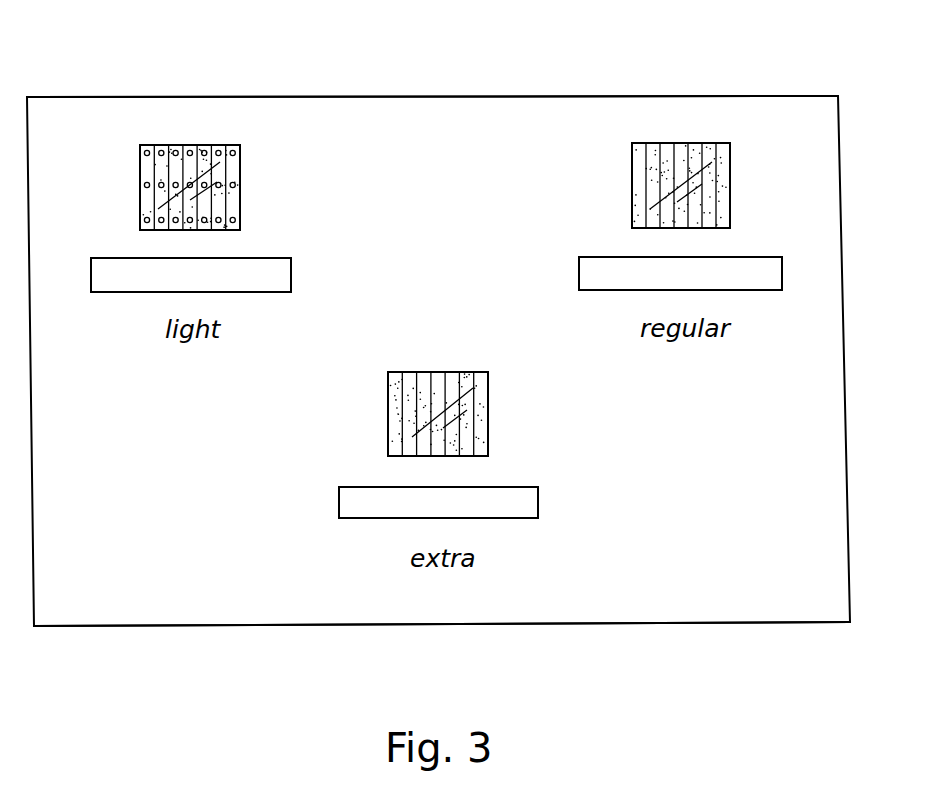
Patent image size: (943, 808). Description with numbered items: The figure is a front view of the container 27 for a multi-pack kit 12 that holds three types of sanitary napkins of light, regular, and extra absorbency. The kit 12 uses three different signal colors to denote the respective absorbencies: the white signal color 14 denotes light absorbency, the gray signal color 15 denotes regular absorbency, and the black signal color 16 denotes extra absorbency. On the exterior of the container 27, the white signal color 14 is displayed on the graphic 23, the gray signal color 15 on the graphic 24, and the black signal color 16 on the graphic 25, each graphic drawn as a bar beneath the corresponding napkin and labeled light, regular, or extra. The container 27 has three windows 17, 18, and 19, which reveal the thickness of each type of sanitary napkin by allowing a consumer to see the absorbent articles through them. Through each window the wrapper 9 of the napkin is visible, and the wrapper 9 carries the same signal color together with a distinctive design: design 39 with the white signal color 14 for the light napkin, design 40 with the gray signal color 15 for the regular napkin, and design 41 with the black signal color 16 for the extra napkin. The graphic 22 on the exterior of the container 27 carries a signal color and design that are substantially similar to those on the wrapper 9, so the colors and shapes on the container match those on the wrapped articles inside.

The wrapper 9 is at (208, 148).
The multi-pack kit 12 is at (588, 95).
The white signal color 14 is at (160, 150).
The gray signal color 15 is at (757, 265).
The black signal color 16 is at (520, 490).
The window 17 is at (233, 170).
The window 18 is at (720, 143).
The window 19 is at (483, 432).
The graphic 22 is at (685, 598).
The graphic 23 is at (292, 257).
The graphic 24 is at (603, 290).
The graphic 25 is at (362, 520).
The container 27 is at (412, 126).
The distinctive design 39 is at (145, 150).
The distinctive design 40 is at (640, 167).
The distinctive design 41 is at (397, 383).